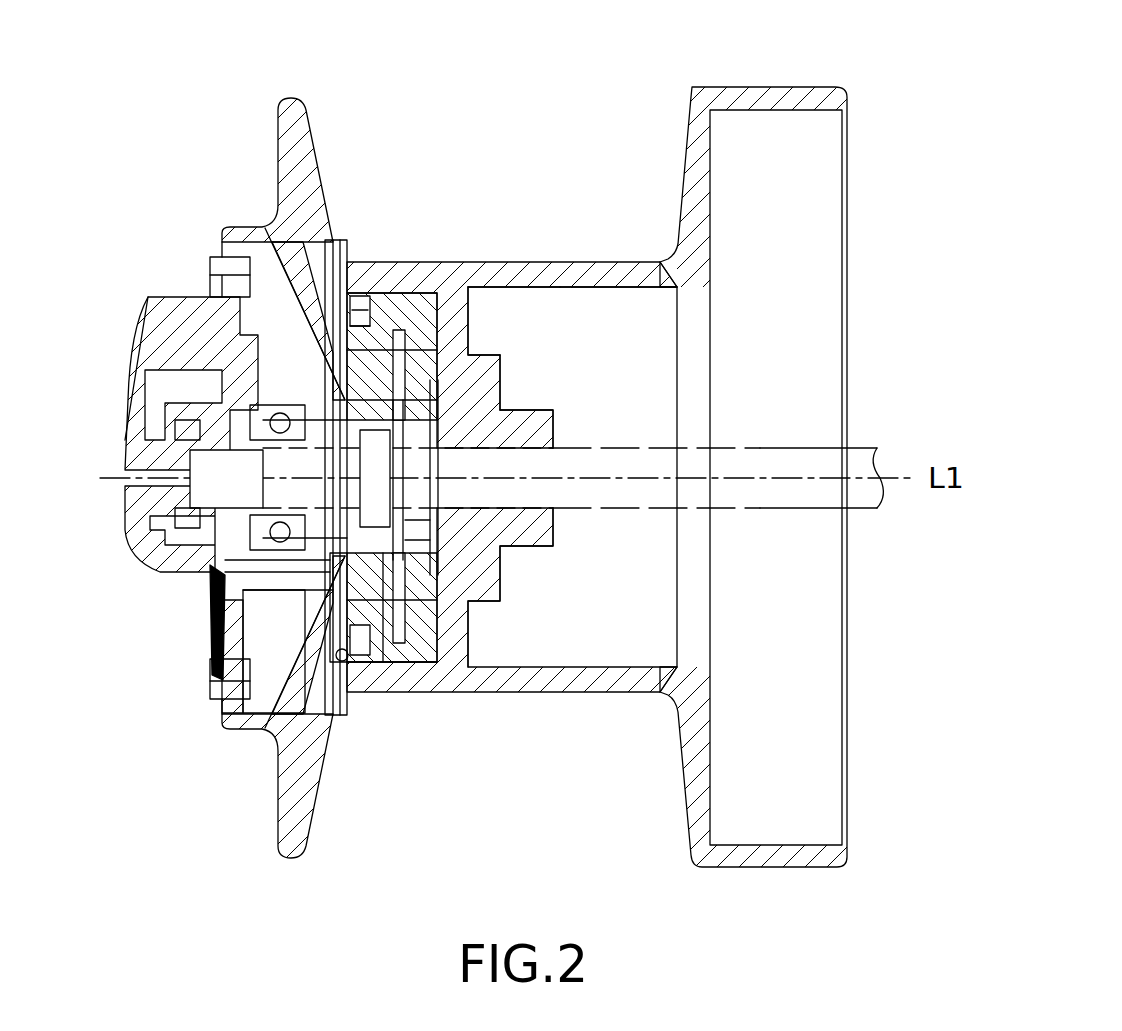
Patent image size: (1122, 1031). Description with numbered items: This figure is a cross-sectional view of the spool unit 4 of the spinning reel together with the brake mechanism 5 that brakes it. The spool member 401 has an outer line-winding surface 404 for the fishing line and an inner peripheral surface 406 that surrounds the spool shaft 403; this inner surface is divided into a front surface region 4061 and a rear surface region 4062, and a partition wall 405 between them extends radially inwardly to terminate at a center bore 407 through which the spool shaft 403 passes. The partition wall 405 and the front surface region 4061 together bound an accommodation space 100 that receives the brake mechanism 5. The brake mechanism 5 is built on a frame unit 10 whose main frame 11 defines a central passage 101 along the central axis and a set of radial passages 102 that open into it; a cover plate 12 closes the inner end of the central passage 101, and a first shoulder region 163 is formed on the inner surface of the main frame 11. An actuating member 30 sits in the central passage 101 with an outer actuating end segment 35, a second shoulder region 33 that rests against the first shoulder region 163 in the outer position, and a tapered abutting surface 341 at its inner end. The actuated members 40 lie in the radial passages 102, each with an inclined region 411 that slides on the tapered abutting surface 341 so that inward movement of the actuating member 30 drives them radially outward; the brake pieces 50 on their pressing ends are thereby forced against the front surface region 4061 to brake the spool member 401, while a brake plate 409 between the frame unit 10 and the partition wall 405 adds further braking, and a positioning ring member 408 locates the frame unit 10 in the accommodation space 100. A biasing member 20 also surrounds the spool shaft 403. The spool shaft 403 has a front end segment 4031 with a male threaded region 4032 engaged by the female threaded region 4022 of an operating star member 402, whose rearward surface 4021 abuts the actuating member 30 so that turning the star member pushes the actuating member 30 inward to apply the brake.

The spool unit 4 is at (312, 102).
The rearward surface 4021 is at (262, 228).
The inner peripheral surface 406 is at (410, 228).
The front surface region 4061 is at (388, 292).
The actuating member 30 is at (340, 262).
The spool member 401 is at (408, 262).
The accommodation space 100 is at (432, 290).
The partition wall 405 is at (498, 283).
The rear surface region 4062 is at (605, 300).
The outer line-winding surface 404 is at (622, 292).
The operating star member 402 is at (192, 340).
The female threaded region 4022 is at (185, 370).
The male threaded region 4032 is at (170, 425).
The front end segment 4031 is at (150, 520).
The outer actuating end segment 35 is at (210, 600).
The cover plate 12 is at (450, 357).
The second shoulder region 33 is at (457, 370).
The first shoulder region 163 is at (440, 410).
The center bore 407 is at (553, 427).
The spool shaft 403 is at (762, 446).
The tapered abutting surface 341 is at (470, 520).
The biasing member 20 is at (440, 552).
The inclined region 411 is at (425, 570).
The radial passages 102 is at (440, 620).
The brake pieces 50 is at (425, 665).
The brake plate 409 is at (455, 672).
The central passage 101 is at (385, 662).
The positioning ring member 408 is at (338, 670).
The brake mechanism 5 is at (421, 686).
The actuated members 40 is at (425, 670).
The frame unit 10 is at (251, 680).
The main frame 11 is at (318, 690).